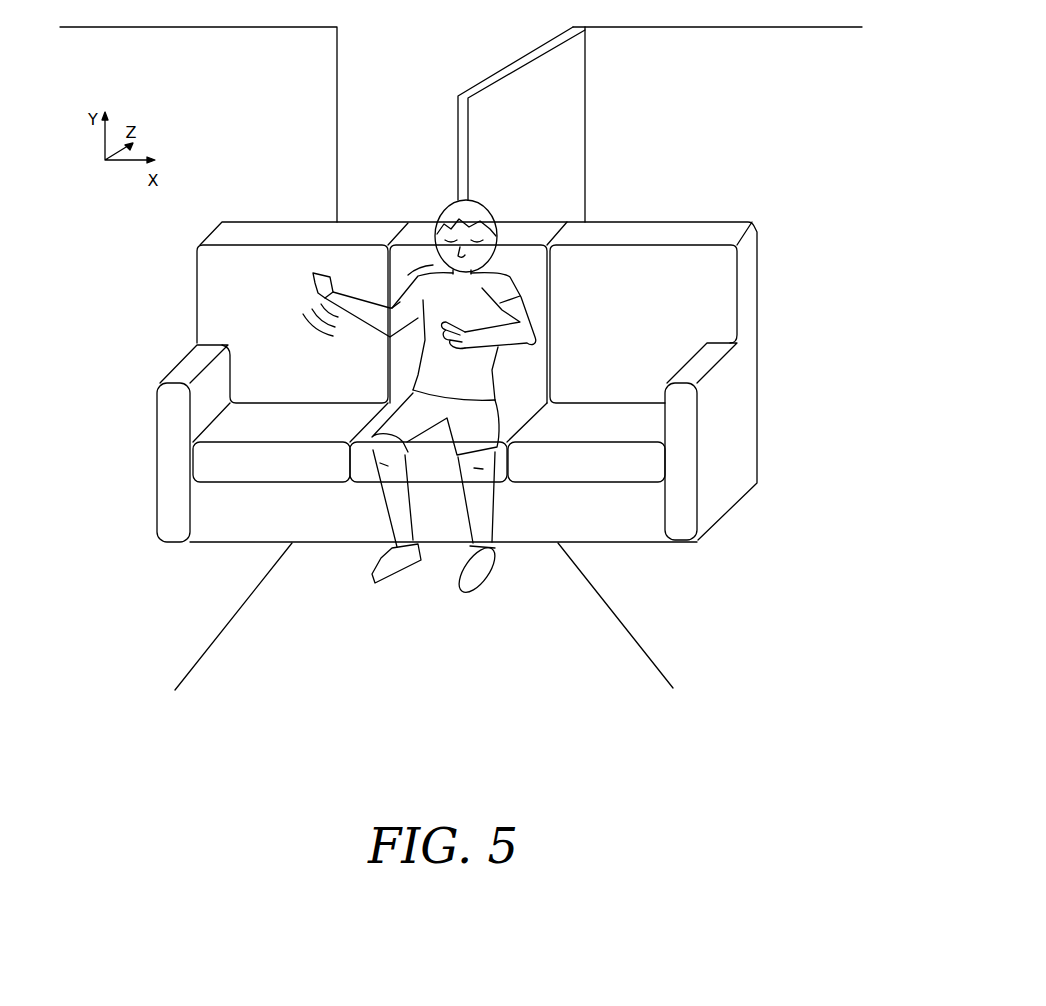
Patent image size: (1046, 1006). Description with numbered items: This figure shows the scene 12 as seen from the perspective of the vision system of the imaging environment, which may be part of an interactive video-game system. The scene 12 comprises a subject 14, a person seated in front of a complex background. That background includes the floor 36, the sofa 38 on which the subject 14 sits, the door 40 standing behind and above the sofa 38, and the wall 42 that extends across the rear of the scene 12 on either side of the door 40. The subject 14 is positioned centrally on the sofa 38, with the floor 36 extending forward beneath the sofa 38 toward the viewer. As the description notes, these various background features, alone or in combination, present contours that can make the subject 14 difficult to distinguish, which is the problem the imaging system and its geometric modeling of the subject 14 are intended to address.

The scene 12 is at (118, 607).
The subject 14 is at (445, 388).
The floor 36 is at (430, 658).
The sofa 38 is at (717, 453).
The door 40 is at (520, 144).
The wall 42 is at (273, 146).